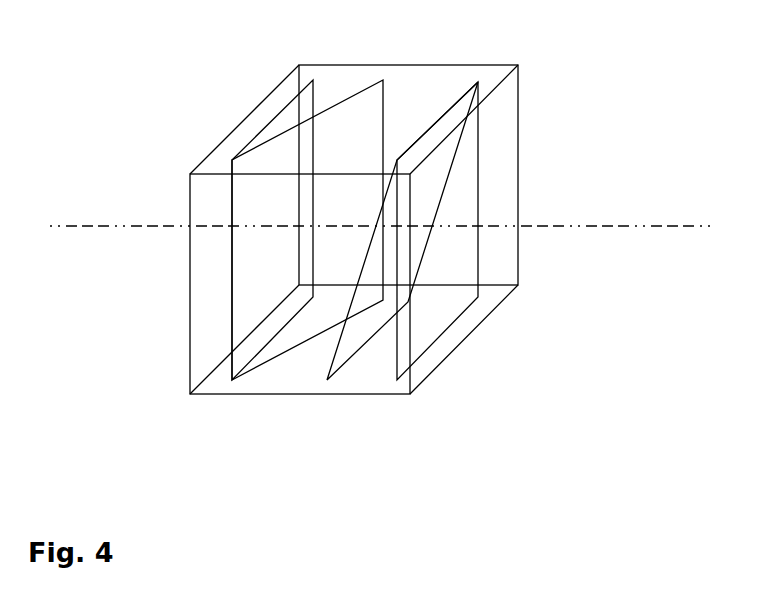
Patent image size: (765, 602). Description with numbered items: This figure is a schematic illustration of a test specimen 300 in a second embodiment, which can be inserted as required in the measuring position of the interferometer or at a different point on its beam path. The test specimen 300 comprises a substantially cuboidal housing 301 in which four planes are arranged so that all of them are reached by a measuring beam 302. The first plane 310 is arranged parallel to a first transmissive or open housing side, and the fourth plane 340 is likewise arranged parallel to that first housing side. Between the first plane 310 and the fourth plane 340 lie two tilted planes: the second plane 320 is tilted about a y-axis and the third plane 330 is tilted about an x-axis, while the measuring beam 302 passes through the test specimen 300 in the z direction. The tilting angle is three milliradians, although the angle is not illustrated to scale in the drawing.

The test specimen 300 is at (215, 72).
The housing 301 is at (508, 267).
The measuring beam 302 is at (647, 225).
The first plane 310 is at (311, 80).
The second plane 320 is at (375, 88).
The third plane 330 is at (350, 342).
The fourth plane 340 is at (473, 83).